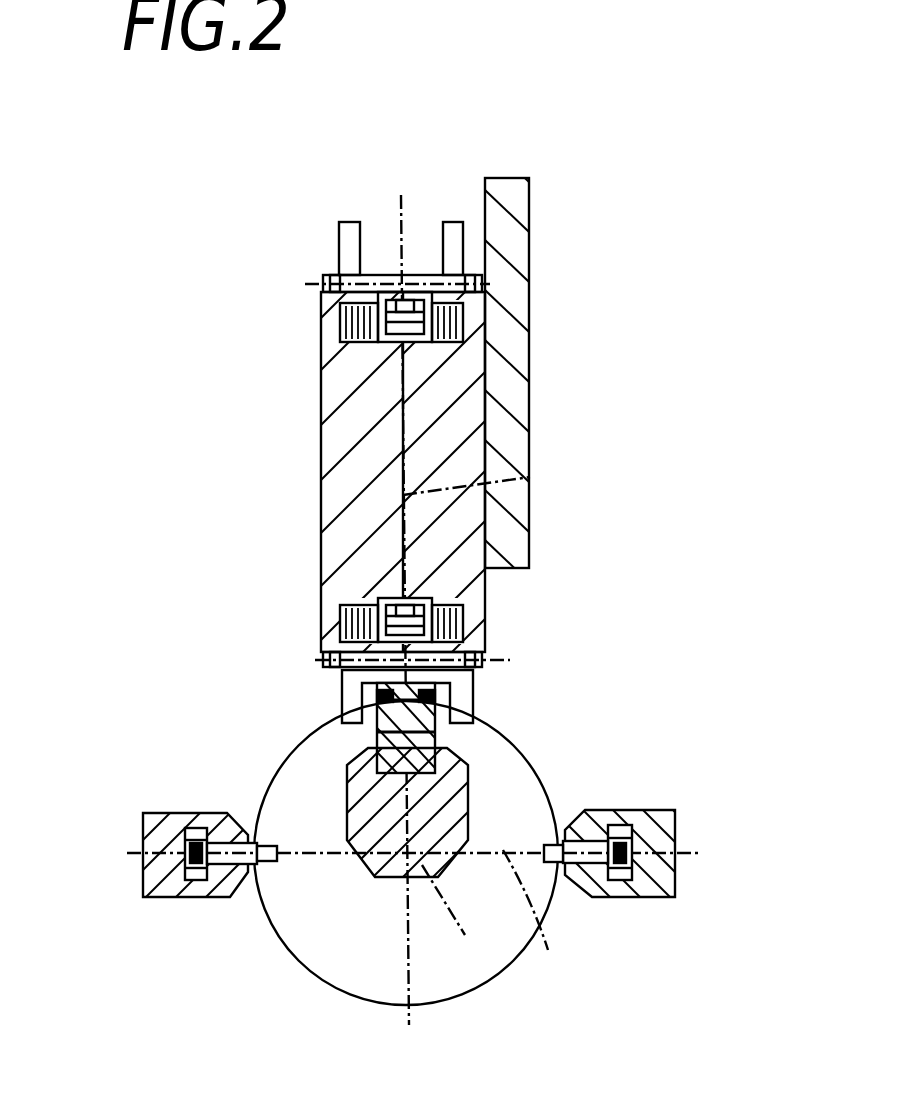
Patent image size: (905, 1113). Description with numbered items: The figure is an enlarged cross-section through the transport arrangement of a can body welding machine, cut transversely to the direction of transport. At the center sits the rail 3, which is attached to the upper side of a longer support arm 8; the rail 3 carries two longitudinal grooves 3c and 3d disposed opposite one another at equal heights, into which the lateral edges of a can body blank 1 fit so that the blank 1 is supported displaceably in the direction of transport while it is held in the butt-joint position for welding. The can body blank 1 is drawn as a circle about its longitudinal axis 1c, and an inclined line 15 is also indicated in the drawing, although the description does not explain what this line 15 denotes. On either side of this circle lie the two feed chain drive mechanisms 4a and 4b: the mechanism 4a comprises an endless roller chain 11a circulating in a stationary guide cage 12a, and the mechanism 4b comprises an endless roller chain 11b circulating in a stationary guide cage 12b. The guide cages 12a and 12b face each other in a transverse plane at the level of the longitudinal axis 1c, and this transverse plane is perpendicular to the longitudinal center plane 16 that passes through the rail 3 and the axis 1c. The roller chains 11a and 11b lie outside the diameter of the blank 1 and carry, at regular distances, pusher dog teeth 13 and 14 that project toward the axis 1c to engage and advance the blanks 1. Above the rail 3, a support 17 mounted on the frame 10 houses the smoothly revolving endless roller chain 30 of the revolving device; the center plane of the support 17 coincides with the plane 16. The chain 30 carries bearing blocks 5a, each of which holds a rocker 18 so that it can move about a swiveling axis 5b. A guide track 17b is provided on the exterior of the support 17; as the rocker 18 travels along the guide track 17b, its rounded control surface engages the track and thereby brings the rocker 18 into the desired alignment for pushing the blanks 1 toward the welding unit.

The can body blank 1 is at (372, 1010).
The longitudinal axis 1c is at (463, 917).
The rail 3 is at (355, 760).
The longitudinal groove 3c is at (380, 703).
The longitudinal groove 3d is at (420, 700).
The feed chain drive mechanism 4a is at (167, 865).
The feed chain drive mechanism 4b is at (662, 856).
The bearing block 5a is at (430, 300).
The swiveling axis 5b is at (374, 300).
The support arm 8 is at (377, 872).
The frame 10 is at (512, 400).
The endless roller chain 11a is at (187, 840).
The endless roller chain 11b is at (640, 878).
The stationary guide cage 12a is at (170, 895).
The stationary guide cage 12b is at (660, 812).
The pusher dog tooth 13 is at (268, 866).
The pusher dog tooth 14 is at (558, 830).
The inclined axis 15 is at (546, 925).
The longitudinal center plane 16 is at (530, 477).
The support 17 is at (338, 522).
The guide track 17b is at (335, 632).
The rocker 18 is at (318, 240).
The endless roller chain 30 is at (455, 318).